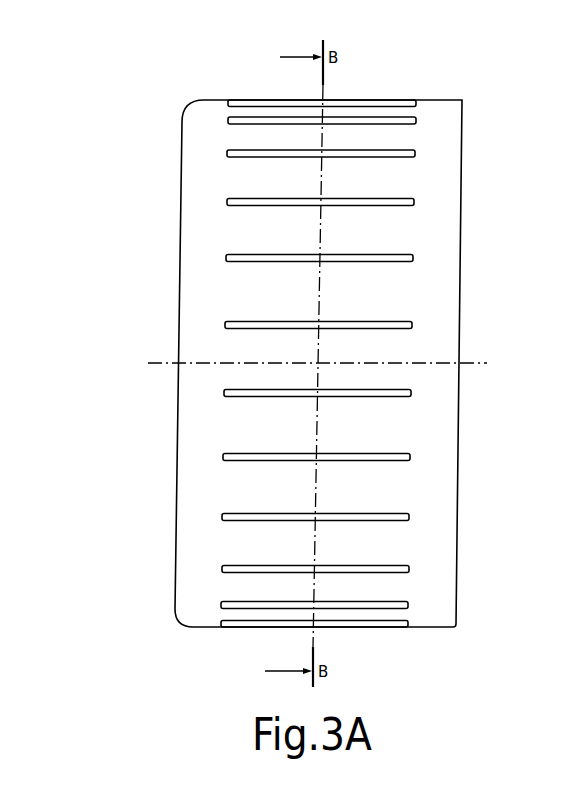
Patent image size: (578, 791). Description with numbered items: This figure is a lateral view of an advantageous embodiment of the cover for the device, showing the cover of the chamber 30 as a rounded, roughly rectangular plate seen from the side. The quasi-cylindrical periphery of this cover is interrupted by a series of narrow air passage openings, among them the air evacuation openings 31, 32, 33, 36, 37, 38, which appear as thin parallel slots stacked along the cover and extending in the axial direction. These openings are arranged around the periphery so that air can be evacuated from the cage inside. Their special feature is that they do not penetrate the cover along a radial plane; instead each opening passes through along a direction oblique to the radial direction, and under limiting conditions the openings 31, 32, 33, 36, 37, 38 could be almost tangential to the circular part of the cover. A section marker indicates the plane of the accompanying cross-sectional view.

The chamber 30 is at (205, 98).
The air evacuation opening 31 is at (421, 106).
The air evacuation opening 32 is at (420, 121).
The air evacuation opening 33 is at (419, 153).
The air evacuation opening 36 is at (420, 567).
The air evacuation opening 37 is at (421, 601).
The air evacuation opening 38 is at (421, 624).